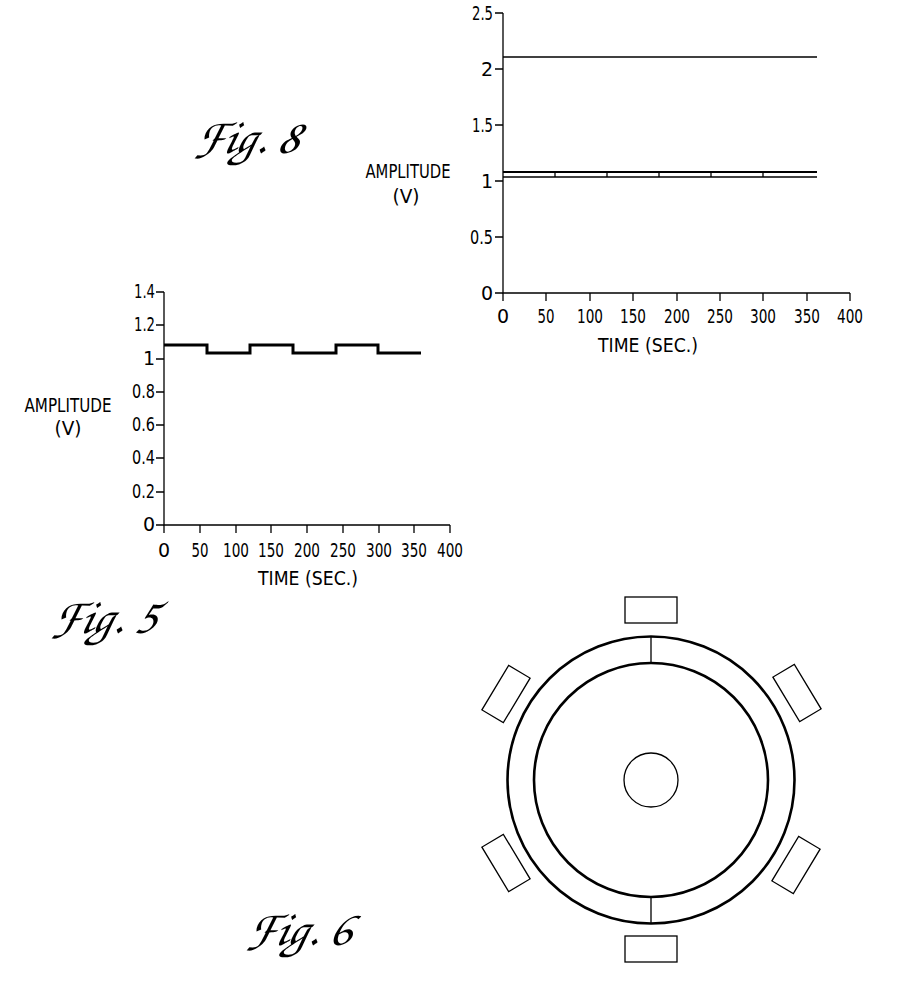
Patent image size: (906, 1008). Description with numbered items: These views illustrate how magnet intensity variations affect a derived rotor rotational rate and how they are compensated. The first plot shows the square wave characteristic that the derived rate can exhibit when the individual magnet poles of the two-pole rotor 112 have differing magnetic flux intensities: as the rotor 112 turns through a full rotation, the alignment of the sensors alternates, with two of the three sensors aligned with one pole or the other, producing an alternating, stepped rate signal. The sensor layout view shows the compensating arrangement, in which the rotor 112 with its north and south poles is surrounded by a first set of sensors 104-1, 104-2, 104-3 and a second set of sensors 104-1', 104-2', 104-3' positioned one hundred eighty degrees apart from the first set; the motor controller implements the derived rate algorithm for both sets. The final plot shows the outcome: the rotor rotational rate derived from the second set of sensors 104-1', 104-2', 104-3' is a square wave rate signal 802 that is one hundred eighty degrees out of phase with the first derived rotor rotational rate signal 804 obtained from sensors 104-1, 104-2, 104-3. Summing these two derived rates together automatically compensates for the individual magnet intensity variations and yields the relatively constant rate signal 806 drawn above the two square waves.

In FIG. 6, the rotor 112 is at (481, 754).
In FIG. 6, the first-set sensor 104-1 is at (471, 862).
In FIG. 6, the first-set sensor 104-2 is at (782, 893).
In FIG. 6, the first-set sensor 104-3 is at (692, 597).
In FIG. 6, the second-set sensor 104-1' is at (810, 676).
In FIG. 6, the second-set sensor 104-2' is at (472, 694).
In FIG. 6, the second-set sensor 104-3' is at (606, 952).
In FIG. 8, the square wave rate signal 802 is at (522, 171).
In FIG. 8, the first derived rotor rotational rate signal 804 is at (533, 180).
In FIG. 8, the relatively constant rate signal 806 is at (632, 58).